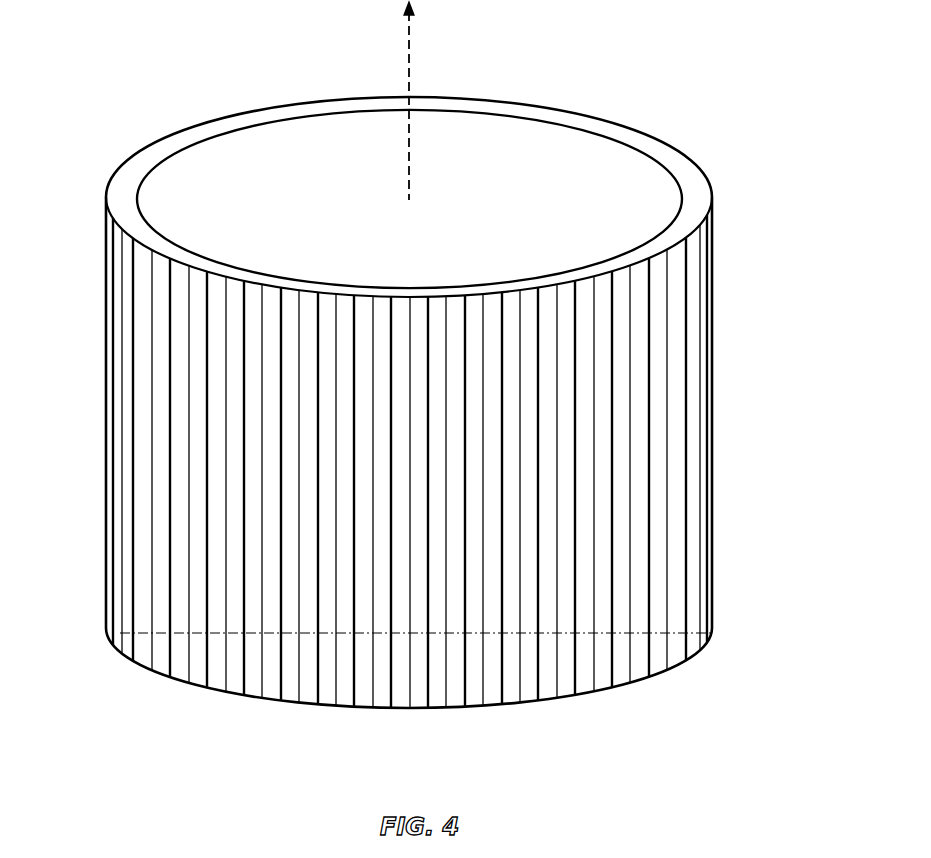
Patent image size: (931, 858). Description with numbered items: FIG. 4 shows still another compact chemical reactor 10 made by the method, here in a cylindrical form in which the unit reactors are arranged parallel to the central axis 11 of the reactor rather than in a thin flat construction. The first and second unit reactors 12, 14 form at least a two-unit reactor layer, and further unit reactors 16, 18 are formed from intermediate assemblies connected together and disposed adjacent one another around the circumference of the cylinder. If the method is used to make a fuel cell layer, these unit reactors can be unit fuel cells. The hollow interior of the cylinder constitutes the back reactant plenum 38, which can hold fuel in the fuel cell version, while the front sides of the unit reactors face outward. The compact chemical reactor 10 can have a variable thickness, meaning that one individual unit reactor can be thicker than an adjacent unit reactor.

The compact chemical reactor 10 is at (112, 61).
The central axis 11 is at (407, 48).
The unit reactor 12 is at (693, 380).
The unit reactor 14 is at (678, 438).
The unit reactor 16 is at (660, 498).
The unit reactor 18 is at (640, 560).
The back reactant plenum 38 is at (568, 168).